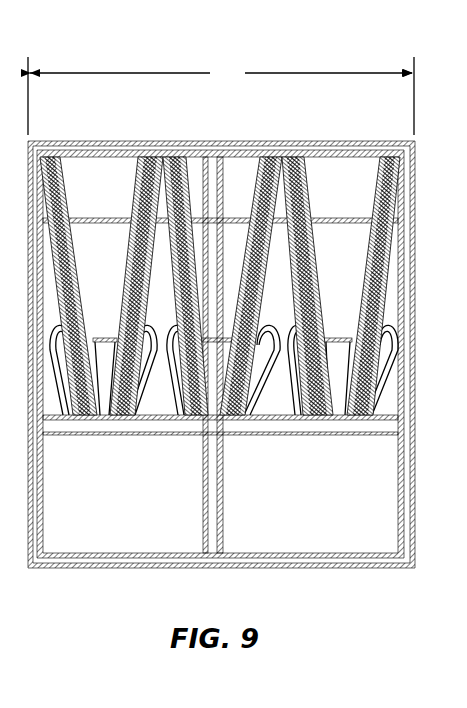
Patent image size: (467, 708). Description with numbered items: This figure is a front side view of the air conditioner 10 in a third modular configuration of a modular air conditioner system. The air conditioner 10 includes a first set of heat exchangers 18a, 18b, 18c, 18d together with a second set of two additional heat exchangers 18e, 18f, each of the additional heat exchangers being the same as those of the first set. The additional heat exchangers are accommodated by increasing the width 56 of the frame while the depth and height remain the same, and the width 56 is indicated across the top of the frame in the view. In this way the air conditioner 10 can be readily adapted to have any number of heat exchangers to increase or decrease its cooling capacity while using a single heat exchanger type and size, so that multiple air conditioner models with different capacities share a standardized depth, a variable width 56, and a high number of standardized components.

The air conditioner 10 is at (339, 47).
The width 56 is at (221, 96).
The heat exchanger 18a is at (385, 262).
The heat exchanger 18b is at (308, 190).
The heat exchanger 18c is at (258, 188).
The heat exchanger 18d is at (186, 185).
The heat exchanger 18e is at (137, 187).
The heat exchanger 18f is at (70, 184).